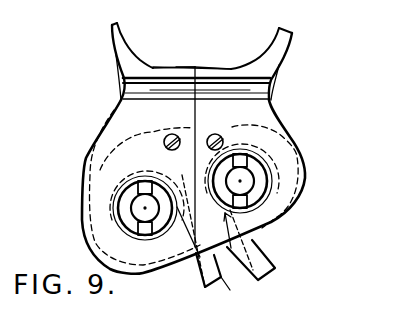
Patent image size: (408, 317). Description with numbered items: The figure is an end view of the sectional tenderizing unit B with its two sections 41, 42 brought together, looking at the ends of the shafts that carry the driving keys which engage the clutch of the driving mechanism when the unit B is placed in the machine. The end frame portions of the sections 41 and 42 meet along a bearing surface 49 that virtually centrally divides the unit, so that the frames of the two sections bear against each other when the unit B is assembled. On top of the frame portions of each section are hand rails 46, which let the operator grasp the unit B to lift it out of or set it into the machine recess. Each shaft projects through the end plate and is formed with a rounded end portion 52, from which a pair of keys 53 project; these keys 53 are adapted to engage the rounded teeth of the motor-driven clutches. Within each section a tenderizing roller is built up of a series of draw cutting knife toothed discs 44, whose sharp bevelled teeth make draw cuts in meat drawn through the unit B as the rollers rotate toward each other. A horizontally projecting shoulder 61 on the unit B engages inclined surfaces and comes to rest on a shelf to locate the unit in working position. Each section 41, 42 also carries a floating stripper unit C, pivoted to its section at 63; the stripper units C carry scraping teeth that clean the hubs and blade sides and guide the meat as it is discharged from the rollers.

The section 41 is at (229, 68).
The section 42 is at (156, 67).
The draw cutting knife toothed disc 44 is at (88, 235).
The hand rail 46 is at (112, 27).
The meeting or bearing surface 49 is at (196, 66).
The rounded end portion 52 is at (131, 207).
The key 53 is at (138, 182).
The horizontally projecting shoulder 61 is at (138, 92).
The pivot 63 is at (175, 136).
The sectional tenderizing unit B is at (176, 67).
The floating stripper unit C is at (258, 280).